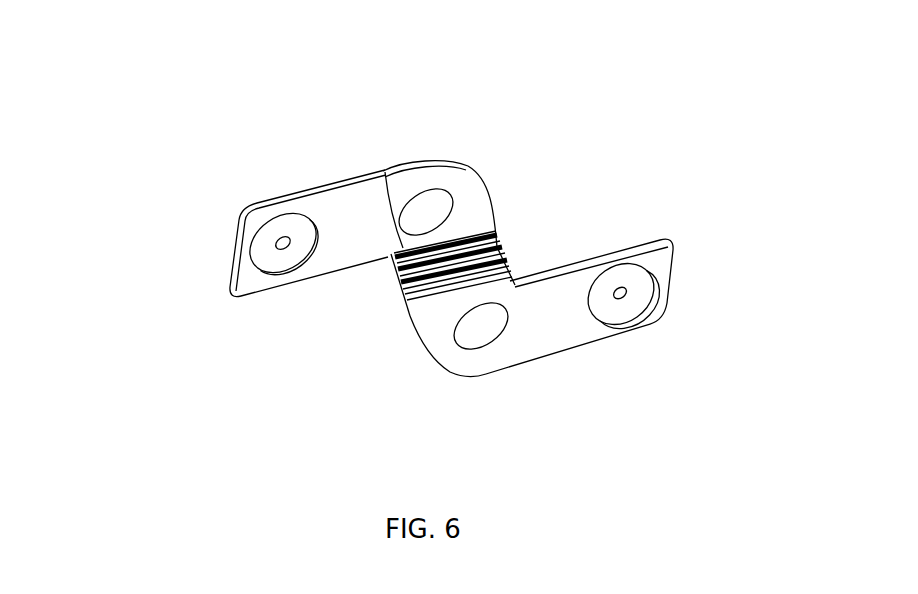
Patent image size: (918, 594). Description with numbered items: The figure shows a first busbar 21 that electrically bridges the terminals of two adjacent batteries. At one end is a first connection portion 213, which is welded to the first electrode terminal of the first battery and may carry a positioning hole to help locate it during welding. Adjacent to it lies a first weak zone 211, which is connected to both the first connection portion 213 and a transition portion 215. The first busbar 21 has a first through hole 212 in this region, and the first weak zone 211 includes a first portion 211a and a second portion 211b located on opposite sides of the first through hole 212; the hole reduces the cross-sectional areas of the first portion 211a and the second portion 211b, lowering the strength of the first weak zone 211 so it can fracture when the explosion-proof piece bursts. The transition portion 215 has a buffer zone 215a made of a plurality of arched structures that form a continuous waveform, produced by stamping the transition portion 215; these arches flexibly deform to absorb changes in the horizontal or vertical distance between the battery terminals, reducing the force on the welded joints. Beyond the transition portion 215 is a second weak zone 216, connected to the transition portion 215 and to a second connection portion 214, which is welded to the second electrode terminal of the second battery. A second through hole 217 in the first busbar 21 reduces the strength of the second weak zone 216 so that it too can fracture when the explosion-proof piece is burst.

The first busbar 21 is at (155, 126).
The first weak zone 211 is at (484, 64).
The first portion 211a is at (379, 168).
The second portion 211b is at (449, 181).
The first through hole 212 is at (430, 210).
The first connection portion 213 is at (302, 223).
The second connection portion 214 is at (622, 309).
The transition portion 215 is at (502, 245).
The buffer zone 215a is at (405, 296).
The second weak zone 216 is at (452, 360).
The second through hole 217 is at (487, 323).